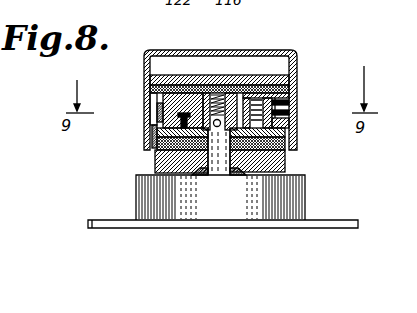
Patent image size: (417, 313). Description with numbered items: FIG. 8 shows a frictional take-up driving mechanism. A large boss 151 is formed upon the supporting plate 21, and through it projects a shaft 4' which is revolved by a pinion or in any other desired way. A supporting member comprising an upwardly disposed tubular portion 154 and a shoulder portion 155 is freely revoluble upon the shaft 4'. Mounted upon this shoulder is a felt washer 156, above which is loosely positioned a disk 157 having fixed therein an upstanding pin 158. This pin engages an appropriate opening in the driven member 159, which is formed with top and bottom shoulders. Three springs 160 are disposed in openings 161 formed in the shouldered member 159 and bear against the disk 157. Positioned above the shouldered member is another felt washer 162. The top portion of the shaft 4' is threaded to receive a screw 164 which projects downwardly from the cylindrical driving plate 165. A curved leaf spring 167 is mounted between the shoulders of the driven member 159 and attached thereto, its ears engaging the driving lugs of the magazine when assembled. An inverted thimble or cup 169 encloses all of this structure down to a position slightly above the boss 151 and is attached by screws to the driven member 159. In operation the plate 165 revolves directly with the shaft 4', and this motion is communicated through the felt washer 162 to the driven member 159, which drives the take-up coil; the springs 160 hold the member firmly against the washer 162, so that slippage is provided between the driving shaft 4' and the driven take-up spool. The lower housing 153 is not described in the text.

The supporting plate 21 is at (341, 219).
The large boss 151 is at (306, 192).
The lower housing block 153 is at (287, 170).
The tubular portion 154 is at (295, 54).
The shoulder portion 155 is at (155, 166).
The felt washer 156 is at (157, 152).
The disk 157 is at (153, 141).
The upstanding pin 158 is at (148, 127).
The driven member 159 is at (150, 96).
The springs 160 is at (292, 100).
The openings 161 is at (295, 111).
The felt washer 162 is at (297, 82).
The screw 164 is at (224, 75).
The cylindrical driving plate 165 is at (190, 75).
The curved leaf spring 167 is at (150, 106).
The inverted thimble or cup 169 is at (258, 76).
The shaft 4' is at (219, 167).